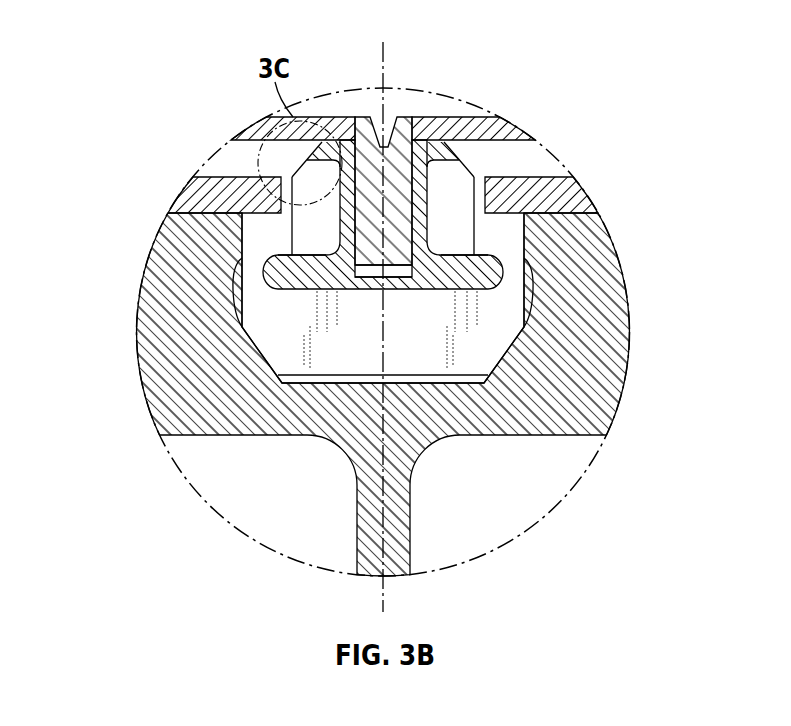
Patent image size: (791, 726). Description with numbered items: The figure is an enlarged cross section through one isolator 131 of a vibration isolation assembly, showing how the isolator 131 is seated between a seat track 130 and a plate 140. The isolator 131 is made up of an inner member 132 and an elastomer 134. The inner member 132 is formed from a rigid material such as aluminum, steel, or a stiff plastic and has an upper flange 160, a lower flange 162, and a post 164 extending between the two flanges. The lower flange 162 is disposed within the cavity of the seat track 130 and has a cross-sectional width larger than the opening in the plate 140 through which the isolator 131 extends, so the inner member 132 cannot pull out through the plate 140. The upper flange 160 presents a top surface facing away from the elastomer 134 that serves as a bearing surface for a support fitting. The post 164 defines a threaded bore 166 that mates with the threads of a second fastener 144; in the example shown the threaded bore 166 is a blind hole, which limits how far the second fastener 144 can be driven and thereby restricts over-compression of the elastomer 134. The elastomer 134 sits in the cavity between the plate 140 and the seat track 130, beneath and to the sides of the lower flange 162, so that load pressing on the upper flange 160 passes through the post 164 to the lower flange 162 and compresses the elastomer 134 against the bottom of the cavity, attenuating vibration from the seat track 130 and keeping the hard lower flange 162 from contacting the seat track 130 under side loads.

The seat track 130 is at (141, 362).
The isolator 131 is at (243, 337).
The inner member 132 is at (428, 145).
The elastomer 134 is at (508, 125).
The plate 140 is at (577, 183).
The second fastener 144 is at (392, 269).
The upper flange 160 is at (317, 148).
The lower flange 162 is at (293, 253).
The post 164 is at (330, 212).
The threaded bore 166 is at (372, 278).